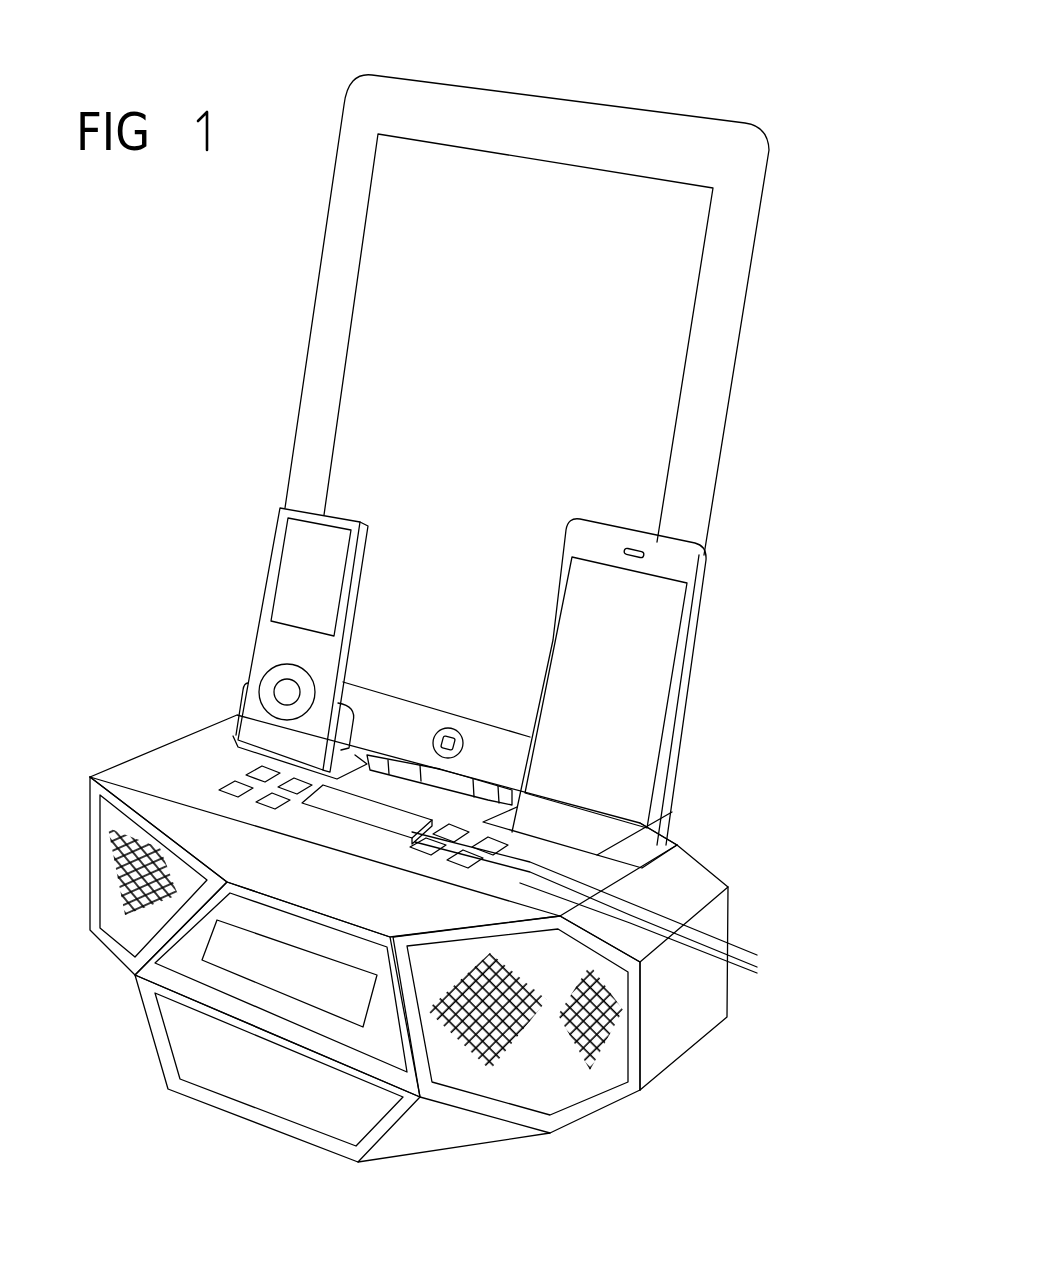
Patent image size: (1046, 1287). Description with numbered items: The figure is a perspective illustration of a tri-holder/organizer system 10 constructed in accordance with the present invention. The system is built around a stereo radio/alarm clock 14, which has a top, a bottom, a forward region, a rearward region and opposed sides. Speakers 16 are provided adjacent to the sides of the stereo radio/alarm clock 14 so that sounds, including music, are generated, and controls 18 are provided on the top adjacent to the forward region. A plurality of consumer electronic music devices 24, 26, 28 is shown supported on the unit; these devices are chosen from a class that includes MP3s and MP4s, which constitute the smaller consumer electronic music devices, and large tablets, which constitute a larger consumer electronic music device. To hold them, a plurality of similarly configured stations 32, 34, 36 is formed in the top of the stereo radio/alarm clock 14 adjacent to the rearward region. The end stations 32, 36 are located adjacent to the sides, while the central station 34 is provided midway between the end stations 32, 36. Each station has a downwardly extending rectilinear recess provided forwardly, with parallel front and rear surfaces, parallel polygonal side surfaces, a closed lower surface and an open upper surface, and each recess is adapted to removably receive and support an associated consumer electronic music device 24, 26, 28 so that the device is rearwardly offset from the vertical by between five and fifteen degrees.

The tri-holder/organizer system 10 is at (830, 478).
The stereo radio/alarm clock 14 is at (173, 740).
The speakers 16 is at (137, 907).
The controls 18 is at (609, 915).
The consumer electronic music device 24 is at (550, 399).
The consumer electronic music device 26 is at (333, 600).
The consumer electronic music device 28 is at (632, 693).
The end station 32 is at (278, 757).
The central station 34 is at (507, 800).
The end station 36 is at (647, 822).